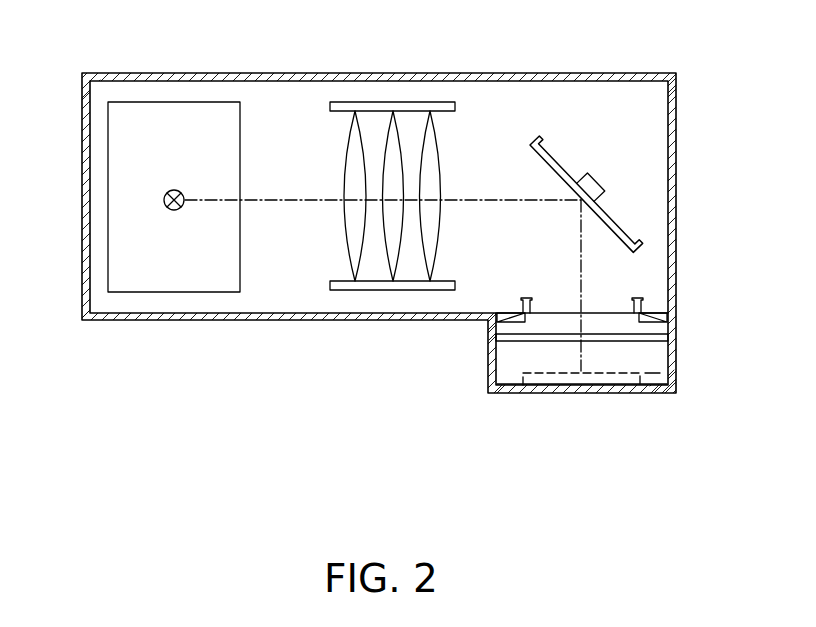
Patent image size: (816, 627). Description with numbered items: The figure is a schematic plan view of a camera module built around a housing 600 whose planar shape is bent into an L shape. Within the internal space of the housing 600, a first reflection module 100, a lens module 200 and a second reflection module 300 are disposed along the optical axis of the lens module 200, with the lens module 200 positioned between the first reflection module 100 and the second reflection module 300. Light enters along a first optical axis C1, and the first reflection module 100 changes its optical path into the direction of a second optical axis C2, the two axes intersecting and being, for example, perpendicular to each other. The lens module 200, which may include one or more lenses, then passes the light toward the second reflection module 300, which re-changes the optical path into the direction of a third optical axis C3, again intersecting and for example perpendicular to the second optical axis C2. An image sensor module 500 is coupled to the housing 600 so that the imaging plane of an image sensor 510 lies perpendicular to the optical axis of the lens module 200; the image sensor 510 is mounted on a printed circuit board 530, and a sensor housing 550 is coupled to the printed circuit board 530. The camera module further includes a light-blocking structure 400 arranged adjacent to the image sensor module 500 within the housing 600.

The first reflection module 100 is at (163, 282).
The lens module 200 is at (360, 103).
The second reflection module 300 is at (562, 167).
The light-blocking structure 400 is at (608, 320).
The image sensor module 500 is at (584, 444).
The image sensor 510 is at (535, 377).
The printed circuit board 530 is at (592, 387).
The sensor housing 550 is at (650, 420).
The housing 600 is at (166, 73).
The first optical axis C1 is at (163, 202).
The second optical axis C2 is at (296, 200).
The third optical axis C3 is at (582, 357).